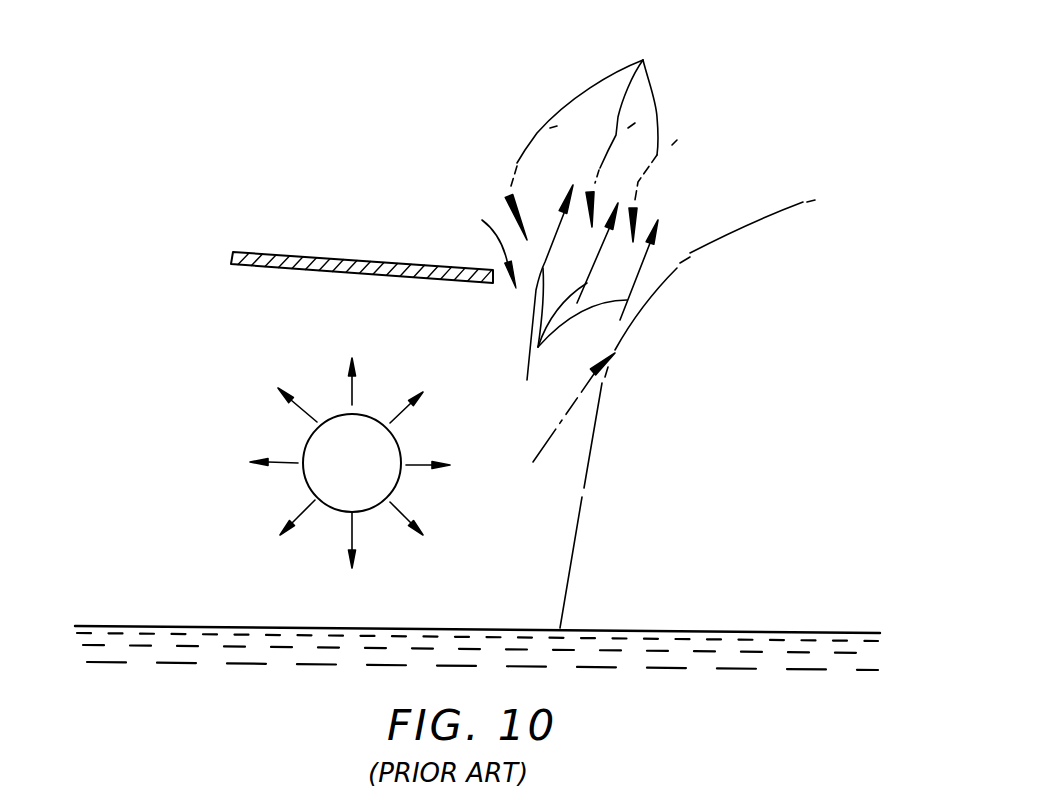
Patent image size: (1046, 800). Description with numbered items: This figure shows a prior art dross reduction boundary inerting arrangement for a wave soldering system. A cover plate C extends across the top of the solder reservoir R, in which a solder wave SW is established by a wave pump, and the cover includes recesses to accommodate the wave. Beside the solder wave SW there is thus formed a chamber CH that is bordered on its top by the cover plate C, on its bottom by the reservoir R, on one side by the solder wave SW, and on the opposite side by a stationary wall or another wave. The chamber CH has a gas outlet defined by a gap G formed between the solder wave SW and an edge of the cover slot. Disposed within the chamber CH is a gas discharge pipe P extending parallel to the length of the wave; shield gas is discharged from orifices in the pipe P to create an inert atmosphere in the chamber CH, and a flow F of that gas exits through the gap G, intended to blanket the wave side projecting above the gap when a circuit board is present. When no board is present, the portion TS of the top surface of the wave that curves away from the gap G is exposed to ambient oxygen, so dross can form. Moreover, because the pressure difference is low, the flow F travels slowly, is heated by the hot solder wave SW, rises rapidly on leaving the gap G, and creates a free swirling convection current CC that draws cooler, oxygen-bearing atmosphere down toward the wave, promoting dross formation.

The cover plate C is at (352, 245).
The gap G is at (486, 245).
The convection current CC is at (591, 141).
The top surface portion of the wave TS is at (747, 205).
The flow of shield gas F is at (585, 296).
The solder wave SW is at (562, 426).
The gas discharge pipe P is at (288, 487).
The chamber CH is at (452, 360).
The reservoir R is at (148, 610).